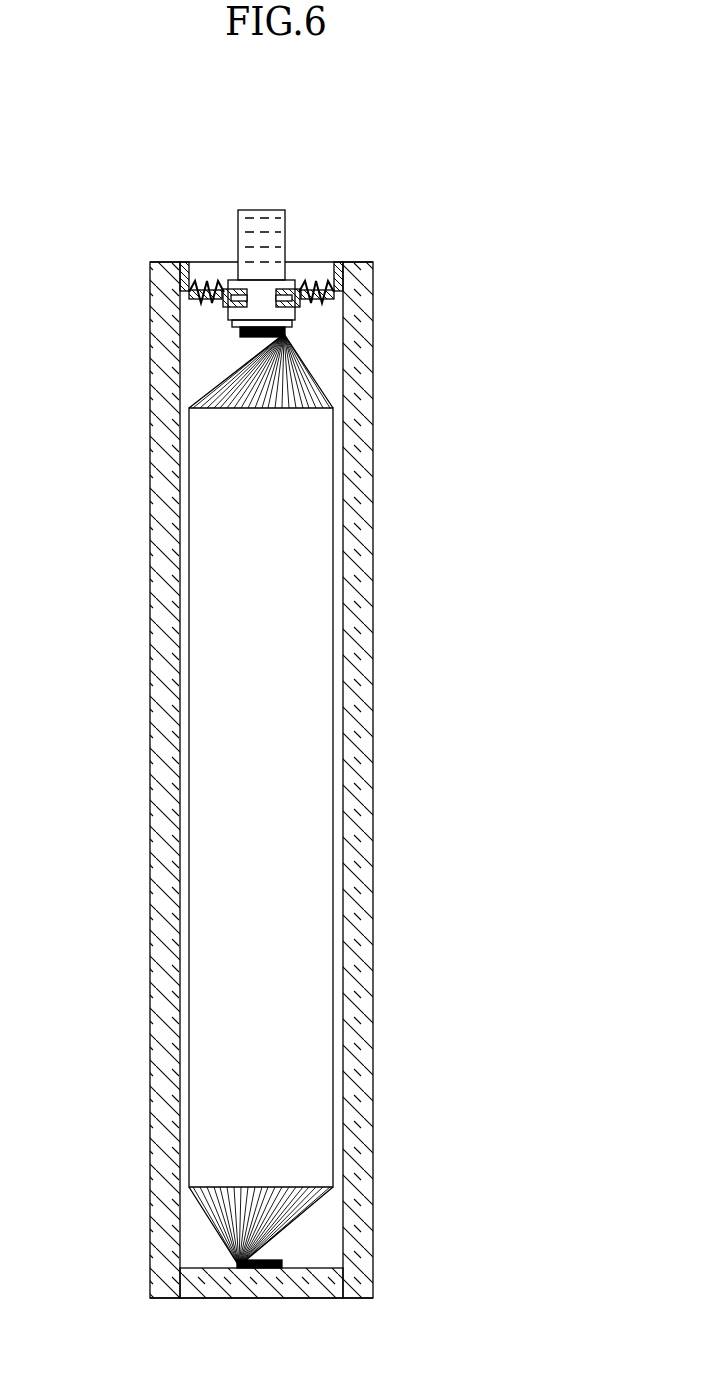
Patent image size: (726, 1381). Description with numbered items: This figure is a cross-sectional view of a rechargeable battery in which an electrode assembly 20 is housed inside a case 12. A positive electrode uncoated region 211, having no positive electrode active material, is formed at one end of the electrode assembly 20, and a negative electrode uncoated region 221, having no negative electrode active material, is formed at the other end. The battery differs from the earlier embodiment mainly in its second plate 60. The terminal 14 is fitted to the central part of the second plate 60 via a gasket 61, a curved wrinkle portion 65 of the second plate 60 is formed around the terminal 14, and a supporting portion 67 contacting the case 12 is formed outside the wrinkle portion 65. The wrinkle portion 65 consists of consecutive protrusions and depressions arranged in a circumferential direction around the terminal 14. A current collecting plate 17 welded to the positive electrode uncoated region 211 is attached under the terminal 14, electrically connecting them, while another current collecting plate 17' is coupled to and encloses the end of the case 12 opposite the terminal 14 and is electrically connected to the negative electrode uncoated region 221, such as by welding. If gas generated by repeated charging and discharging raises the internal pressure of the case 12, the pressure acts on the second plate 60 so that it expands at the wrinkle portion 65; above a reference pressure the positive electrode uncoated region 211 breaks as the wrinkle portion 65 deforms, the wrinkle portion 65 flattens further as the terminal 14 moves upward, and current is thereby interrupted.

The case 12 is at (360, 603).
The terminal 14 is at (262, 215).
The current collecting plate 17 is at (174, 308).
The current collecting plate 17' is at (325, 1279).
The electrode assembly 20 is at (300, 540).
The positive electrode uncoated region 211 is at (295, 368).
The negative electrode uncoated region 221 is at (288, 1208).
The second plate 60 is at (184, 259).
The gasket 61 is at (302, 290).
The wrinkle portion 65 is at (208, 284).
The supporting portion 67 is at (331, 277).